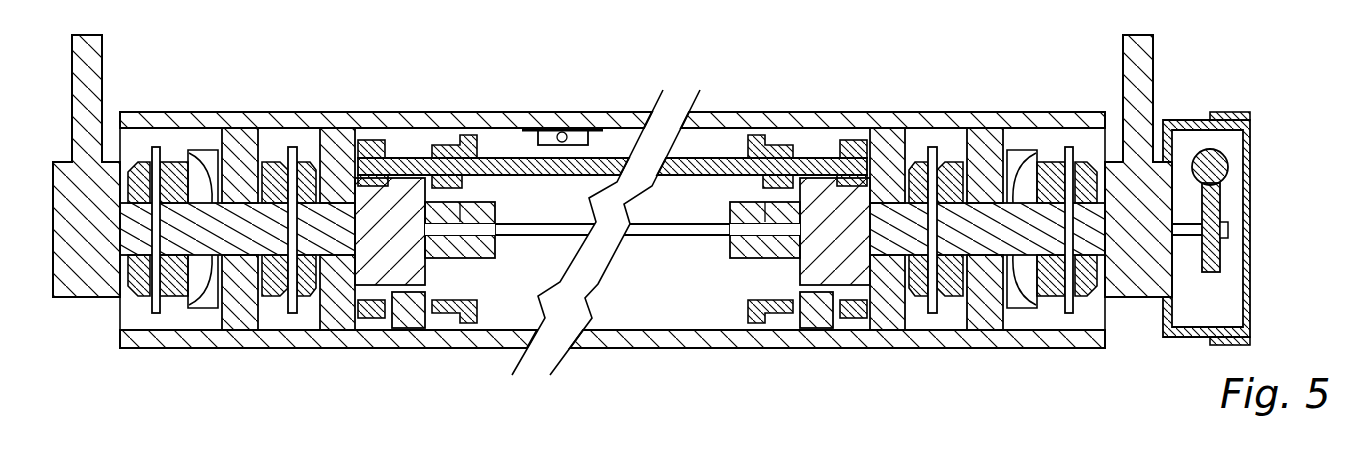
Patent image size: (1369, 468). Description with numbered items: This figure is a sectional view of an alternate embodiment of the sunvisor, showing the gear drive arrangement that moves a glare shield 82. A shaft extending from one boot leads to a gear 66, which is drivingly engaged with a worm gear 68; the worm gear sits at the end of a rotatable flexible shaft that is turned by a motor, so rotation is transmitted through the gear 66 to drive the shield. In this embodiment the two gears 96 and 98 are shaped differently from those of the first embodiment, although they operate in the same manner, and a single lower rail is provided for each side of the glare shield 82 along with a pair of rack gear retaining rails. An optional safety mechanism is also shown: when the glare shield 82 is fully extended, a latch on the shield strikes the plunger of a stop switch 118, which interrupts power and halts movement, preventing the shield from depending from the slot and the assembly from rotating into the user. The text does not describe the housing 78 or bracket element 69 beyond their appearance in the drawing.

The gear 66 is at (1222, 190).
The worm gear 68 is at (1220, 158).
The end bracket 69 is at (1250, 250).
The housing 78 is at (612, 174).
The glare shield 82 is at (493, 157).
The gear 96 is at (378, 262).
The gear 98 is at (845, 262).
The stop switch 118 is at (552, 136).